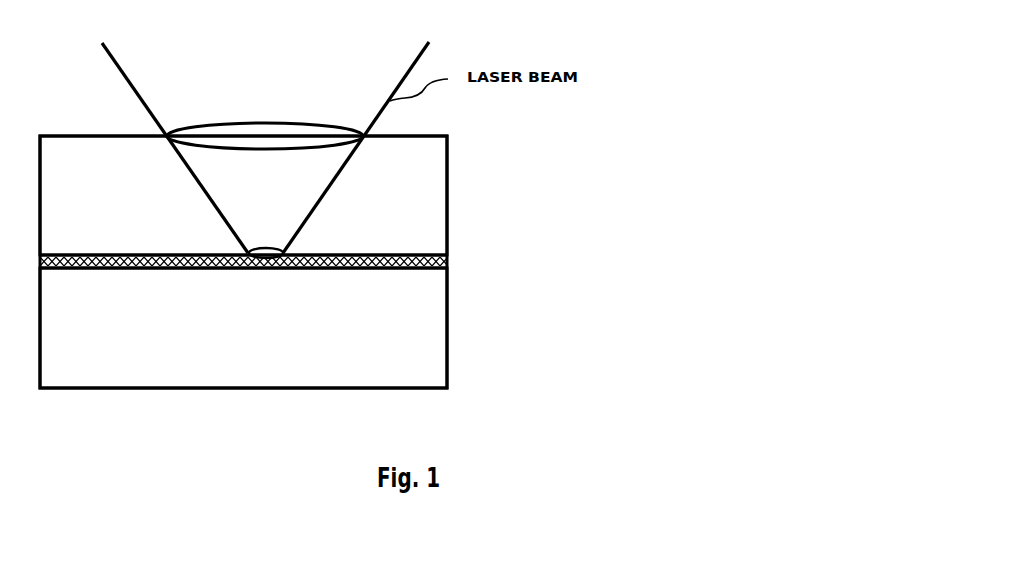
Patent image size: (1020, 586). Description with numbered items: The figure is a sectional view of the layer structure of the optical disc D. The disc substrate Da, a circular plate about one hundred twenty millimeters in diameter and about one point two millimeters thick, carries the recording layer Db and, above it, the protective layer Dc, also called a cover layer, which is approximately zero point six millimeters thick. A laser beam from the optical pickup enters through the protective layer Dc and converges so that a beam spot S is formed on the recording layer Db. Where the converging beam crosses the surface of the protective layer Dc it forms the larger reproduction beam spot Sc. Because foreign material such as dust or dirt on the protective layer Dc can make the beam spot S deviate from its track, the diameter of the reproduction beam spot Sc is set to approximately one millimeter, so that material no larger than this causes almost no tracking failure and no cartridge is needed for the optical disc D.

The optical disc D is at (700, 350).
The protective layer Dc is at (447, 181).
The recording layer Db is at (447, 261).
The disc substrate Da is at (447, 315).
The reproduction beam spot Sc is at (203, 135).
The beam spot S is at (258, 250).